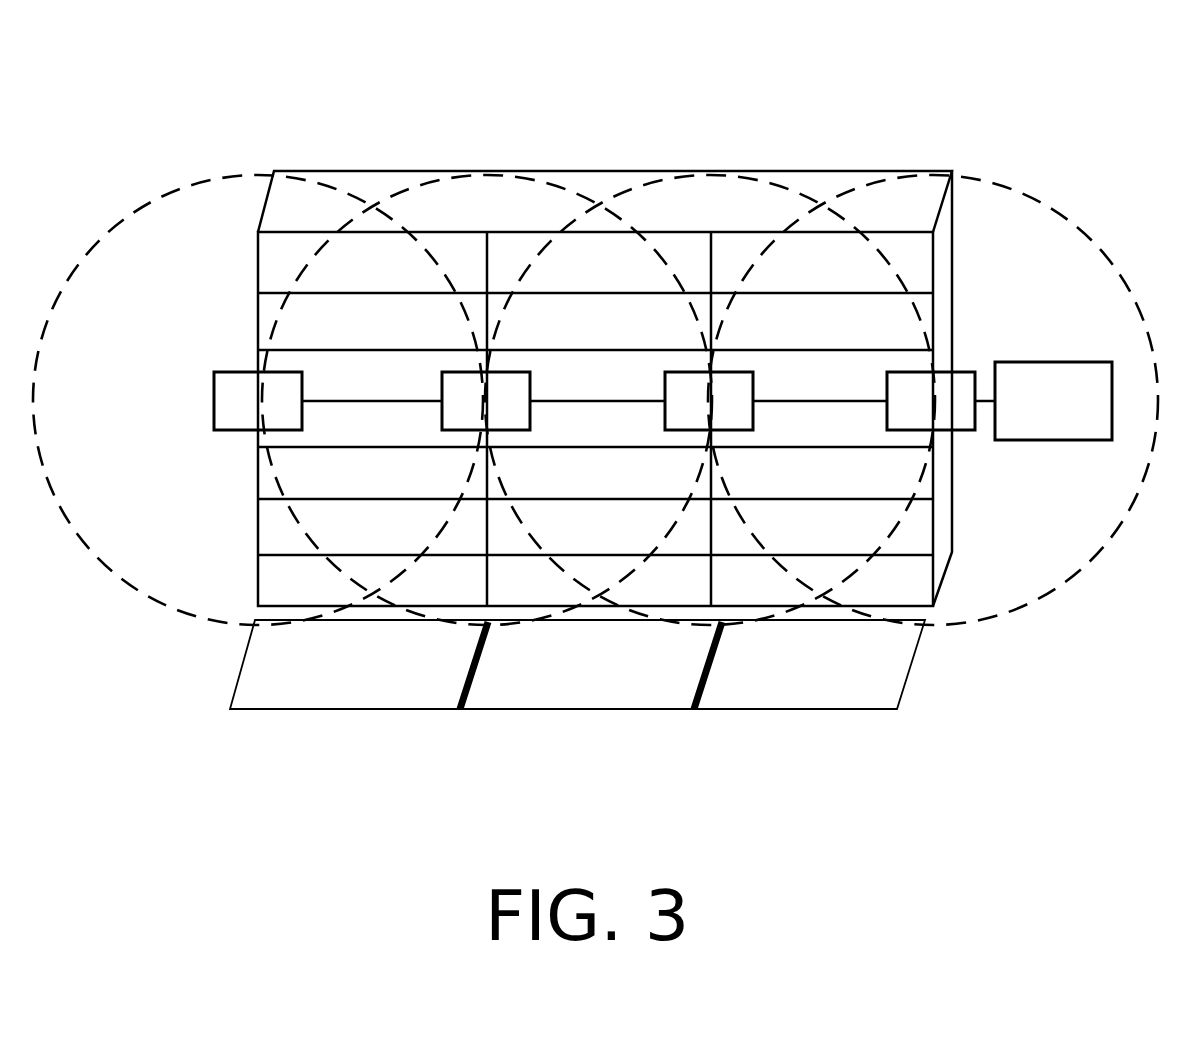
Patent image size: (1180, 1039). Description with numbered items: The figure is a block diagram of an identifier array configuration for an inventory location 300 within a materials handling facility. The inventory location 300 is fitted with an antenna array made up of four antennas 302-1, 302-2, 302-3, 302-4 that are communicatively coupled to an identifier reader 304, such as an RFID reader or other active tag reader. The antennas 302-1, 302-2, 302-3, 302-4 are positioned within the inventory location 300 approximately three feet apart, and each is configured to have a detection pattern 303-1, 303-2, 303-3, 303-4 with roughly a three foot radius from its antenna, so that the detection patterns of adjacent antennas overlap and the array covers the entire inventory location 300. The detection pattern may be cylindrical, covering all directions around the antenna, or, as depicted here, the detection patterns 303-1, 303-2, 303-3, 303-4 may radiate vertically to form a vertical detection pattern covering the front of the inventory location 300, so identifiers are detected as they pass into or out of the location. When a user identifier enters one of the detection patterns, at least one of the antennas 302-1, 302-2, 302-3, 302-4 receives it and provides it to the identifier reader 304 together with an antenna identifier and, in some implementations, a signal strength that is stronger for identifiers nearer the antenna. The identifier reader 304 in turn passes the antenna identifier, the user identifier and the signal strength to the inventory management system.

The inventory location 300 is at (255, 79).
The antenna 302-1 is at (258, 401).
The antenna 302-2 is at (486, 401).
The antenna 302-3 is at (709, 401).
The antenna 302-4 is at (931, 401).
The detection pattern 303-1 is at (188, 188).
The detection pattern 303-2 is at (474, 176).
The detection pattern 303-3 is at (698, 176).
The detection pattern 303-4 is at (923, 176).
The identifier reader 304 is at (1053, 401).